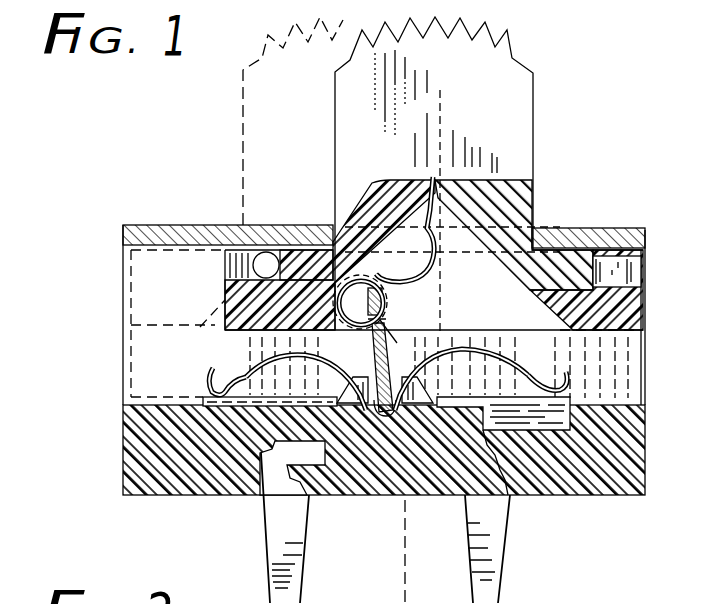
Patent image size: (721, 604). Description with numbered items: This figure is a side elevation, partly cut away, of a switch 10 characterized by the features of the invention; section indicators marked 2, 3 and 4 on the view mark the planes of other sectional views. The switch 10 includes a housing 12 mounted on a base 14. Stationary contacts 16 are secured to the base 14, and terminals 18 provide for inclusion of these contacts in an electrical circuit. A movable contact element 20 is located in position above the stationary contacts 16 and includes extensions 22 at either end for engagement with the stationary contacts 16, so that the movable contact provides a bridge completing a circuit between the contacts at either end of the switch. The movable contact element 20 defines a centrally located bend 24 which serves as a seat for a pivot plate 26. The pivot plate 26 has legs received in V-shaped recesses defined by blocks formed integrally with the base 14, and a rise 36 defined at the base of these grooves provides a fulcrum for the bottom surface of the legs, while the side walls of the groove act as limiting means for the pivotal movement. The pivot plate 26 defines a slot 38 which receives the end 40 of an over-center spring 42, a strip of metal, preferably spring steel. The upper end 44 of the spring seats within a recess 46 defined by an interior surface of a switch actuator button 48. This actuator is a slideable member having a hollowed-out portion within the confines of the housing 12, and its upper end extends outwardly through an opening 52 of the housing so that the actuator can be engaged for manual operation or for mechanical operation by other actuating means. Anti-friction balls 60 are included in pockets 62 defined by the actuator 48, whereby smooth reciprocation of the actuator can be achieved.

The switch 10 is at (86, 210).
The housing 12 is at (122, 285).
The base 14 is at (157, 497).
The stationary contacts 16 is at (207, 390).
The terminals 18 is at (278, 526).
The movable contact element 20 is at (425, 357).
The extensions 22 is at (220, 368).
The bend 24 is at (385, 412).
The pivot plate 26 is at (367, 352).
The rise 36 is at (362, 410).
The slot 38 is at (418, 287).
The end of over-center spring 40 is at (385, 326).
The over-center spring 42 is at (435, 263).
The upper end of spring 44 is at (403, 188).
The recess 46 is at (528, 183).
The switch actuator button 48 is at (518, 150).
The opening 52 is at (243, 228).
The anti-friction balls 60 is at (538, 252).
The pockets 62 is at (595, 232).
The section line 2- 2 is at (438, 127).
The section line 3- 3 is at (272, 192).
The section line 4- 4 is at (80, 358).